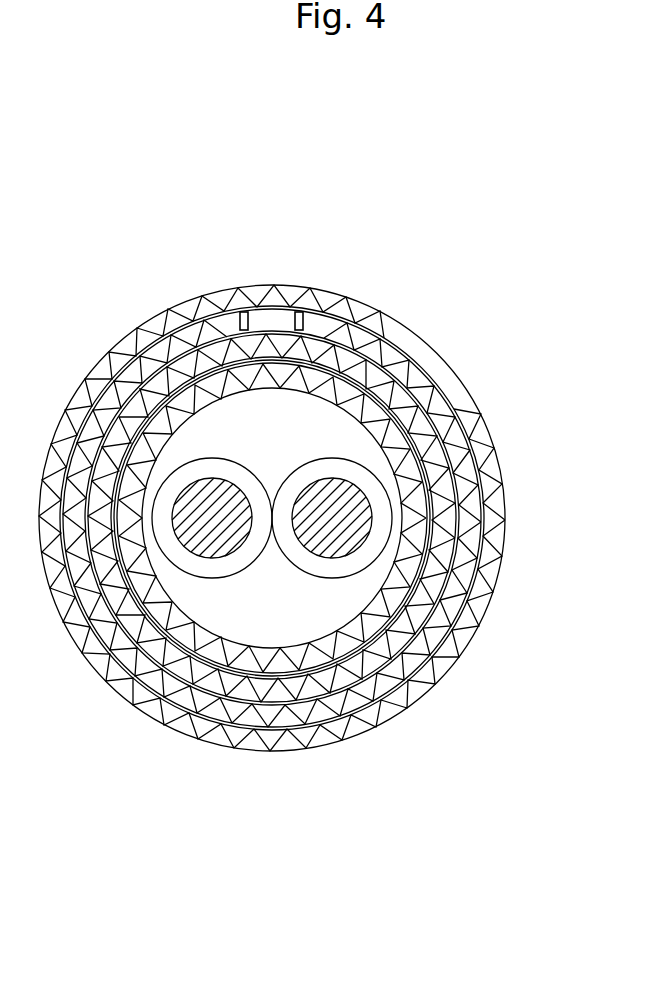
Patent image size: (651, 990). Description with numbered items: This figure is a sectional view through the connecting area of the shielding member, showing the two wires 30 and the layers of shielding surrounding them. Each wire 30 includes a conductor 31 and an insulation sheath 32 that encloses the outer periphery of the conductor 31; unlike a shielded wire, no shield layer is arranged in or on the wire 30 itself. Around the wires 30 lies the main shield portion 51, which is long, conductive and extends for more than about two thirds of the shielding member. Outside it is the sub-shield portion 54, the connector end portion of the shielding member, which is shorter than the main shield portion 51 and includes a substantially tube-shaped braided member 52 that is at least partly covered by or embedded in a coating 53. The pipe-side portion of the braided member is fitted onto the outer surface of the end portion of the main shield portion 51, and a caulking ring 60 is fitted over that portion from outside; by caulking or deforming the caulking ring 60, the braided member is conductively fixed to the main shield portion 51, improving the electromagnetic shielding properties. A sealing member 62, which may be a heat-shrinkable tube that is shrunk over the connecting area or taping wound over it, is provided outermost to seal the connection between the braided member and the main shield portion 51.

The wire 30 is at (267, 652).
The conductor 31 is at (203, 535).
The insulation sheath 32 is at (245, 555).
The main shield portion 51 is at (310, 377).
The braided member 52 is at (395, 343).
The coating 53 is at (440, 388).
The sub-shield portion 54 is at (476, 246).
The caulking ring 60 is at (463, 467).
The sealing member 62 is at (465, 628).